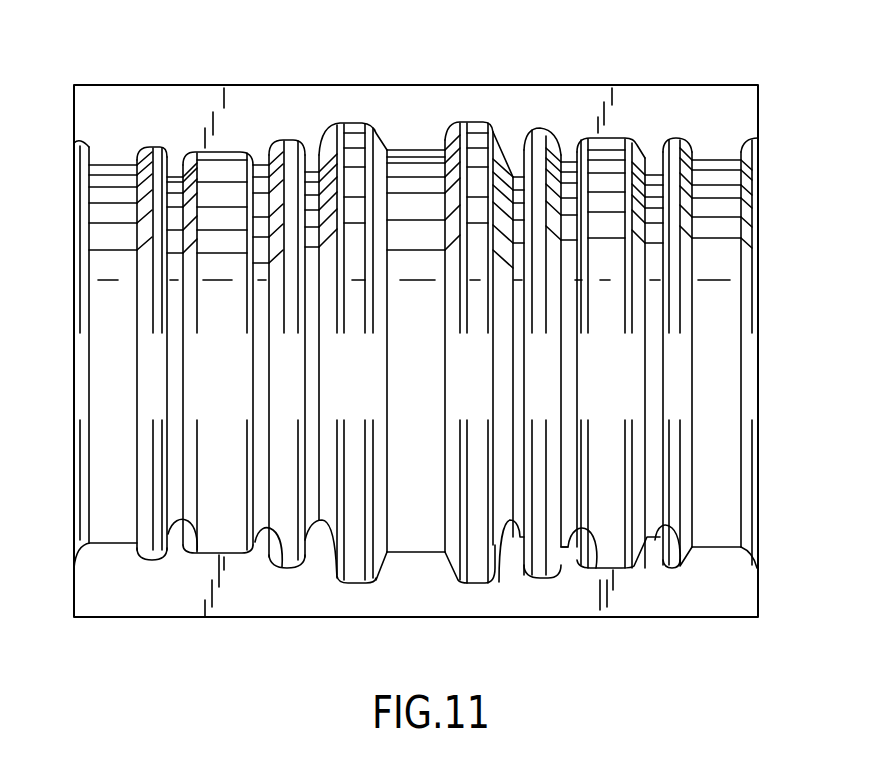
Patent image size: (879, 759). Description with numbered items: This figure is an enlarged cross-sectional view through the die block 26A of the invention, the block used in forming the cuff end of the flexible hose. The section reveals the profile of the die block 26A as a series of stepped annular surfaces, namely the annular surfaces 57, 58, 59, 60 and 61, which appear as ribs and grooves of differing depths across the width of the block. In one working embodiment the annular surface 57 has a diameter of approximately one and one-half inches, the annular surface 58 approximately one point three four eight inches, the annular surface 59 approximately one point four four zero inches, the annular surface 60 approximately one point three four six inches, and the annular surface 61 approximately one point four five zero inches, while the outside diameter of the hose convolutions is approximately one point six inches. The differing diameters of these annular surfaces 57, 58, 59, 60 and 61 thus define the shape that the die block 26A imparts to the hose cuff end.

The die block 26A is at (745, 112).
The annular surface 57 is at (408, 157).
The annular surface 58 is at (336, 578).
The annular surface 59 is at (273, 560).
The annular surface 60 is at (192, 552).
The annular surface 61 is at (112, 543).